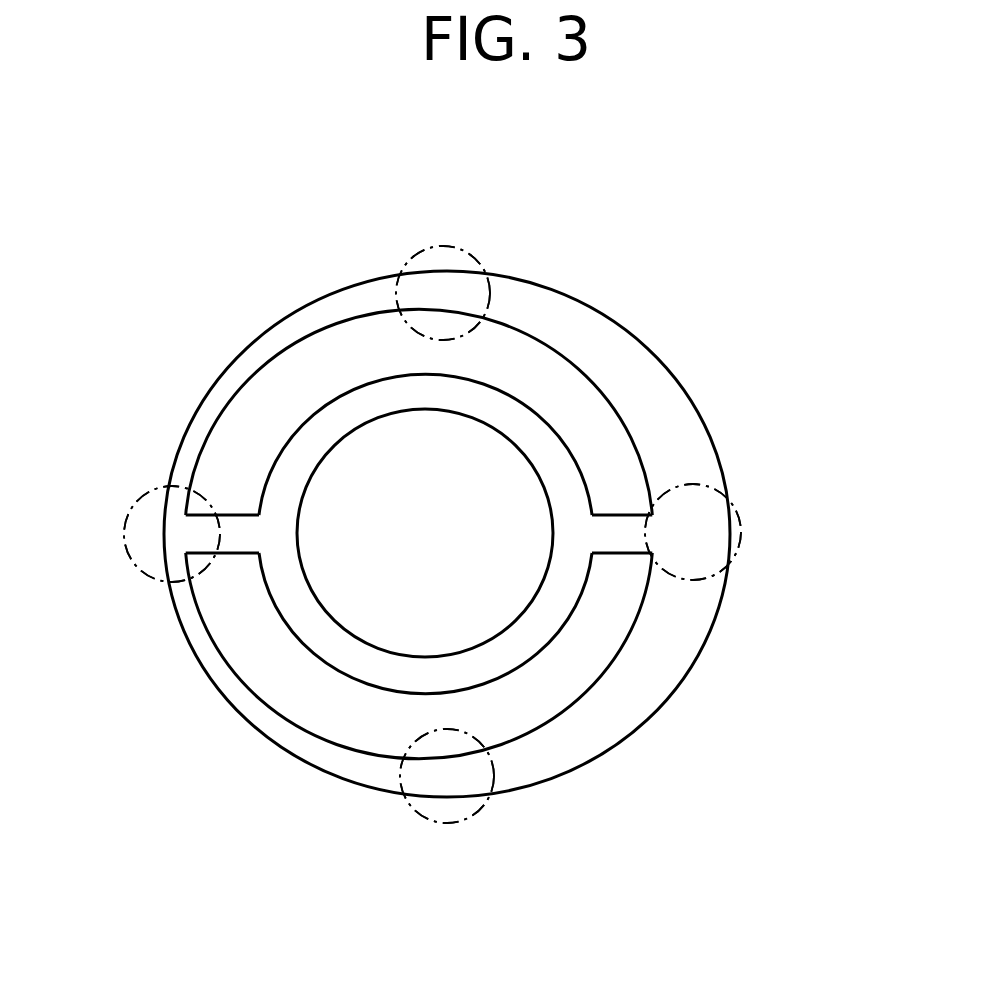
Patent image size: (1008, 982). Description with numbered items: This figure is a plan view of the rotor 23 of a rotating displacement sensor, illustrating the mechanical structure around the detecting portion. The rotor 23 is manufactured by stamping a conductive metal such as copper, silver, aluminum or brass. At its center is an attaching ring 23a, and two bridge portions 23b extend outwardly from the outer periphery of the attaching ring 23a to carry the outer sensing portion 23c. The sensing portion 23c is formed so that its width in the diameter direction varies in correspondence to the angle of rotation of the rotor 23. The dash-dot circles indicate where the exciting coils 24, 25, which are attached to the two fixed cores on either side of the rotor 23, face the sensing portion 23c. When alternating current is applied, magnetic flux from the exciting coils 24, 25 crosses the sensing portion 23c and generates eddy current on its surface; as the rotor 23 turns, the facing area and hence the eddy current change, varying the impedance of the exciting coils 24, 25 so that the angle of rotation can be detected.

The rotor 23 is at (636, 320).
The attaching ring 23a is at (553, 460).
The bridge portions 23b is at (247, 523).
The sensing portion 23c is at (637, 692).
The exciting coil 24 is at (446, 245).
The exciting coil 25 is at (432, 534).